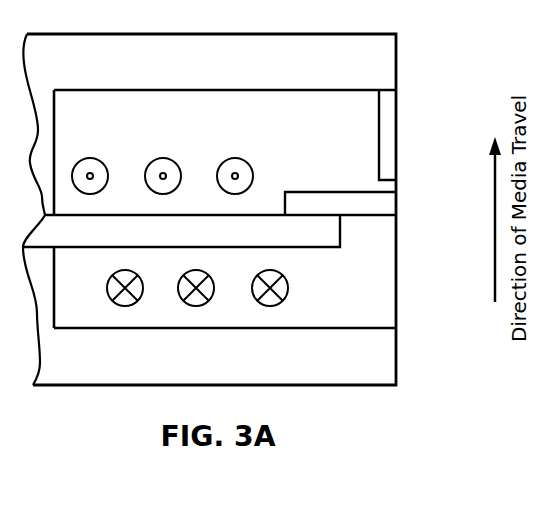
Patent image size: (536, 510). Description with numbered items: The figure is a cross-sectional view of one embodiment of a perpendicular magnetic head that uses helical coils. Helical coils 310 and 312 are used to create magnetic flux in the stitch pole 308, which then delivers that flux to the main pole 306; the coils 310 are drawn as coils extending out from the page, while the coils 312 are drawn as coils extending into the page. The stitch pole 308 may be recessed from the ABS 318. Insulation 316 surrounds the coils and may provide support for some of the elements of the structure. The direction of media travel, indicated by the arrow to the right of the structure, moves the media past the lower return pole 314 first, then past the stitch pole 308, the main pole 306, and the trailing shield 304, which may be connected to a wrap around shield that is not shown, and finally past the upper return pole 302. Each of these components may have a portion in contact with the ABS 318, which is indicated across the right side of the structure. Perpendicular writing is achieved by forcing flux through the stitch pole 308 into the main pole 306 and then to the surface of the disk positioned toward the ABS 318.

The upper return pole 302 is at (225, 70).
The trailing shield 304 is at (397, 138).
The main pole 306 is at (397, 197).
The stitch pole 308 is at (209, 231).
The helical coils 310 is at (86, 158).
The helical coils 312 is at (108, 295).
The lower return pole 314 is at (225, 348).
The insulation 316 is at (215, 209).
The ABS 318 is at (409, 53).